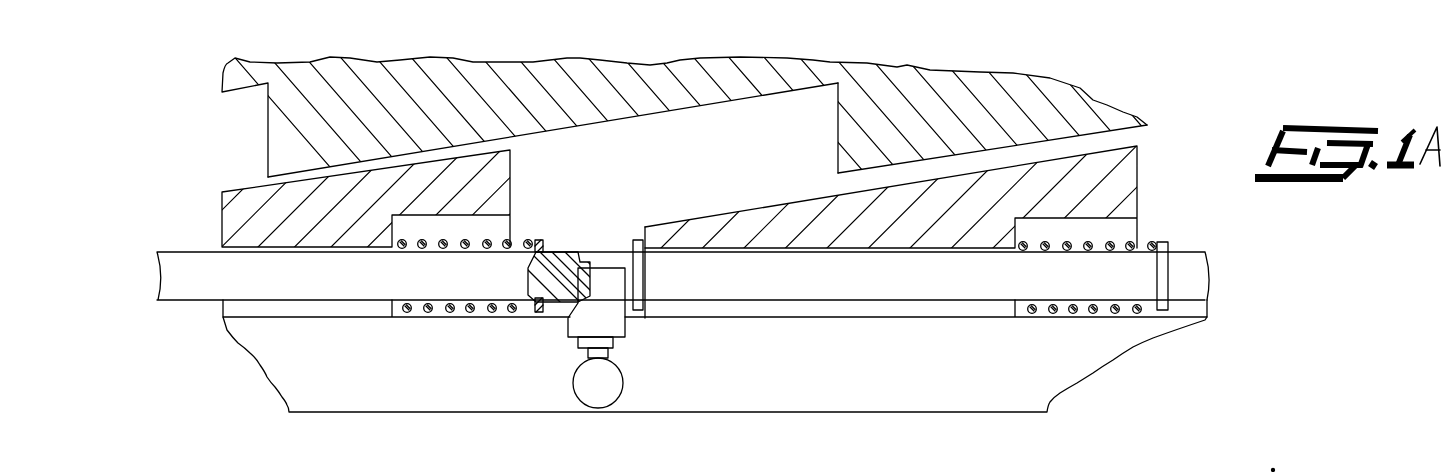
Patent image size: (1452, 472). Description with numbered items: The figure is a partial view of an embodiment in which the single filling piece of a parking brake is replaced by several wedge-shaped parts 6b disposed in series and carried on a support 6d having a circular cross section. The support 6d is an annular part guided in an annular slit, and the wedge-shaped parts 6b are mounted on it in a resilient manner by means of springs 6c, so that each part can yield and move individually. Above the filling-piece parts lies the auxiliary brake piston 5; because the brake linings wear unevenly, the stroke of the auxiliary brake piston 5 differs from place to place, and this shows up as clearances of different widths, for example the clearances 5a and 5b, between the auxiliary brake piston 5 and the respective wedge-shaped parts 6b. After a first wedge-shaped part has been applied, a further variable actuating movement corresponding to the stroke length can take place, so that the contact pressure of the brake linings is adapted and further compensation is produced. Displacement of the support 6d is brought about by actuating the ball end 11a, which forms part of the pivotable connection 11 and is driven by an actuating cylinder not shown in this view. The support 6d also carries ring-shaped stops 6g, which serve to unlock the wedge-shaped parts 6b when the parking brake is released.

The auxiliary brake piston 5 is at (234, 83).
The clearance 5a is at (278, 180).
The clearance 5b is at (860, 181).
The wedge-shaped parts 6b is at (240, 235).
The springs 6c is at (428, 310).
The support 6d is at (878, 288).
The stops 6g is at (645, 315).
The pivotable connection 11 is at (588, 328).
The ball end 11a is at (604, 394).